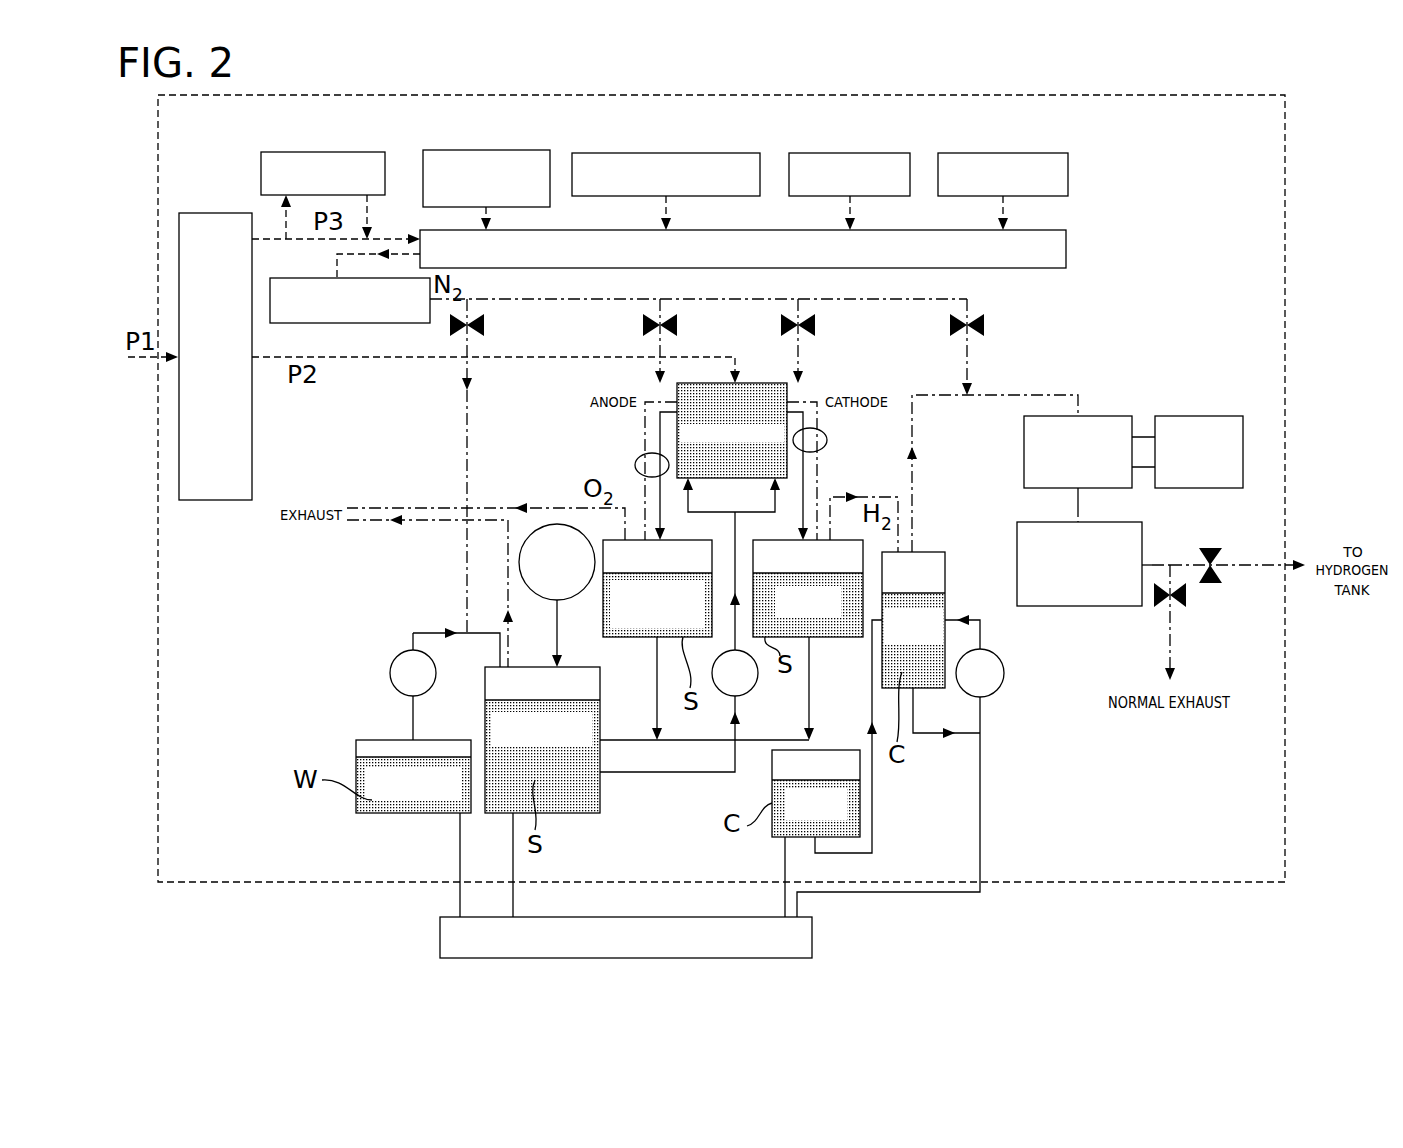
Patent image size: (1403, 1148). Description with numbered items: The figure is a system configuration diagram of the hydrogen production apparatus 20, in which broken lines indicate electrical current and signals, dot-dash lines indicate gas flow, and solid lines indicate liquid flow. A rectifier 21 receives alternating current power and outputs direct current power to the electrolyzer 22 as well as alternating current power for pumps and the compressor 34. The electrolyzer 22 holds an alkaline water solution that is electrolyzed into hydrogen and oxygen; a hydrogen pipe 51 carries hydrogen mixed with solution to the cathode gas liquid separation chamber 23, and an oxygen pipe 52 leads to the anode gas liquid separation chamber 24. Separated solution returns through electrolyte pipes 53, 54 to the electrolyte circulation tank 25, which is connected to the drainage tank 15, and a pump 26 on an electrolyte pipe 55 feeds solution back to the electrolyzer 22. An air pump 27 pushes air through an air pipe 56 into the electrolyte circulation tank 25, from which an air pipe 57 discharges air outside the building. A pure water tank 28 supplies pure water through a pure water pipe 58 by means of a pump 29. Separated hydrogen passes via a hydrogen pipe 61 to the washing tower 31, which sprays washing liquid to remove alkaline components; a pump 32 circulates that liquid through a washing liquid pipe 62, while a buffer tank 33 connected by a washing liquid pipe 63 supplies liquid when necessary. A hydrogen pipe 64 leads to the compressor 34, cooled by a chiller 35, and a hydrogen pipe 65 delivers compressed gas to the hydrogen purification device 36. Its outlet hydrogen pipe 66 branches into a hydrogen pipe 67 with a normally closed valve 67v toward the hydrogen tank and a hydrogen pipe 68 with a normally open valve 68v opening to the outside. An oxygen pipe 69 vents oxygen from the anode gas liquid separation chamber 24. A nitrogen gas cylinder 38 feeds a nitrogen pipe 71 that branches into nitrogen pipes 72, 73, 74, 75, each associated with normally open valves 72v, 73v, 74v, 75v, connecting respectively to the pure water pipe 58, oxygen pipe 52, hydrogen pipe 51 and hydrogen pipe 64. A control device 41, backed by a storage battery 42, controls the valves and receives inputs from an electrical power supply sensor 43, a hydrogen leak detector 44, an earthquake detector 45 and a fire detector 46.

The drainage tank 15 is at (440, 930).
The hydrogen production apparatus 20 is at (1168, 95).
The rectifier 21 is at (227, 500).
The electrolyzer 22 is at (740, 383).
The cathode gas liquid separation chamber 23 is at (818, 637).
The anode gas liquid separation chamber 24 is at (622, 637).
The electrolyte circulation tank 25 is at (583, 813).
The pump 26 is at (752, 690).
The air pump 27 is at (580, 600).
The pure water tank 28 is at (356, 748).
The pump 29 is at (397, 649).
The washing tower 31 is at (928, 552).
The pump 32 is at (995, 647).
The buffer tank 33 is at (772, 828).
The compressor 34 is at (1103, 416).
The chiller 35 is at (1205, 416).
The hydrogen purification device 36 is at (1065, 606).
The nitrogen gas cylinder 38 is at (393, 323).
The control device 41 is at (1066, 250).
The storage battery 42 is at (346, 152).
The electrical power supply sensor 43 is at (493, 150).
The hydrogen leak detector 44 is at (655, 153).
The earthquake detector 45 is at (850, 153).
The fire detector 46 is at (993, 153).
The hydrogen pipe 51 is at (827, 438).
The oxygen pipe 52 is at (640, 458).
The electrolyte pipe 53 is at (812, 700).
The electrolyte pipe 54 is at (660, 687).
The electrolyte pipe 55 is at (645, 773).
The air pipe 56 is at (553, 617).
The air pipe 57 is at (408, 522).
The pure water pipe 58 is at (433, 633).
The hydrogen pipe 61 is at (884, 496).
The washing liquid pipe 62 is at (935, 738).
The washing liquid pipe 63 is at (873, 835).
The hydrogen pipe 64 is at (914, 478).
The hydrogen pipe 65 is at (1075, 505).
The hydrogen pipe 66 is at (1152, 560).
The hydrogen pipe 67 is at (1190, 560).
The normally closed valve 67v is at (1216, 551).
The hydrogen pipe 68 is at (1168, 636).
The normally open valve 68v is at (1185, 600).
The oxygen pipe 69 is at (548, 507).
The nitrogen pipe 71 is at (897, 298).
The nitrogen pipe 72 is at (465, 432).
The normally open valve 72v is at (484, 325).
The nitrogen pipe 73 is at (655, 343).
The normally open valve 73v is at (677, 325).
The nitrogen pipe 74 is at (805, 352).
The normally open valve 74v is at (815, 325).
The nitrogen pipe 75 is at (967, 347).
The normally open valve 75v is at (984, 325).